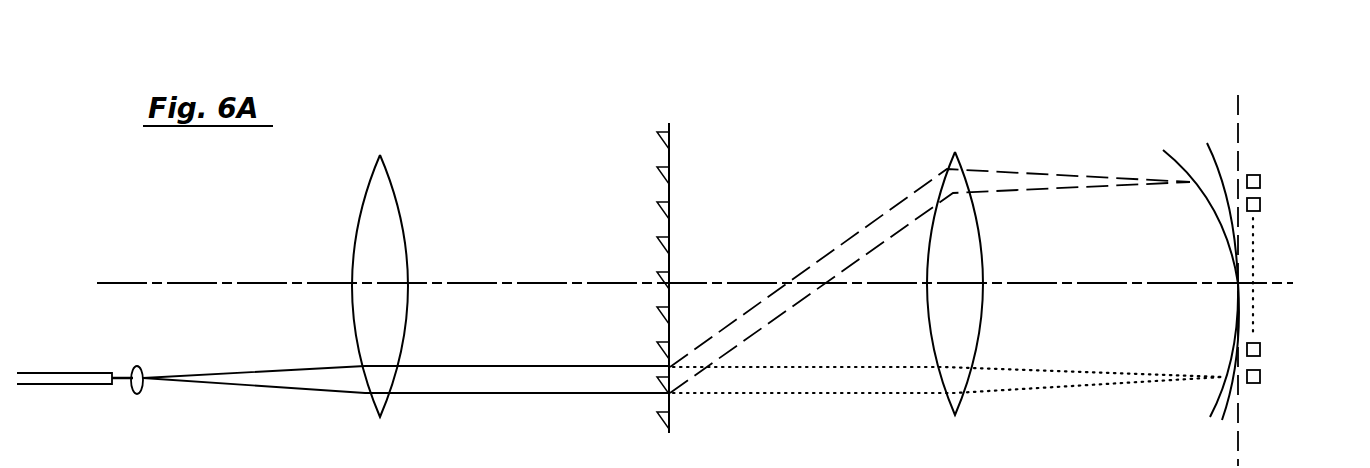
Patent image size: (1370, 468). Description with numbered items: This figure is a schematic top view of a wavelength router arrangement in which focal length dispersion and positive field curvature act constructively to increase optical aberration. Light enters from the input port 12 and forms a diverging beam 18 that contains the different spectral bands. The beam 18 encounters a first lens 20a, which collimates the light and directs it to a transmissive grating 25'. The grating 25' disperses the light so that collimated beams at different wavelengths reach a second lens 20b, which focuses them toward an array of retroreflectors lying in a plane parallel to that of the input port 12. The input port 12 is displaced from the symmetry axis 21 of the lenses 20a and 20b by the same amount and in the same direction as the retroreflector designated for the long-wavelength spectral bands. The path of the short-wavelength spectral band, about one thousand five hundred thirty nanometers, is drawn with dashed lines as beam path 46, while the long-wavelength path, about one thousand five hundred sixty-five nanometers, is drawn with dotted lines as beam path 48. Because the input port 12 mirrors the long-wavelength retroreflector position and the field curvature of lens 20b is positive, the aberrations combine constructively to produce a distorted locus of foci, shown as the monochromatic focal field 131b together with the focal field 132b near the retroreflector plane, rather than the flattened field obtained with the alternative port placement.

The input port 12 is at (72, 372).
The diverging beam 18 is at (143, 372).
The symmetry axis 21 is at (283, 283).
The first lens 20a is at (390, 170).
The transmissive grating 25' is at (704, 266).
The short-wavelength beam path 46 is at (840, 247).
The long-wavelength beam path 48 is at (862, 365).
The second lens 20b is at (960, 165).
The focal field 132b is at (1166, 150).
The monochromatic focal field 131b is at (1210, 145).